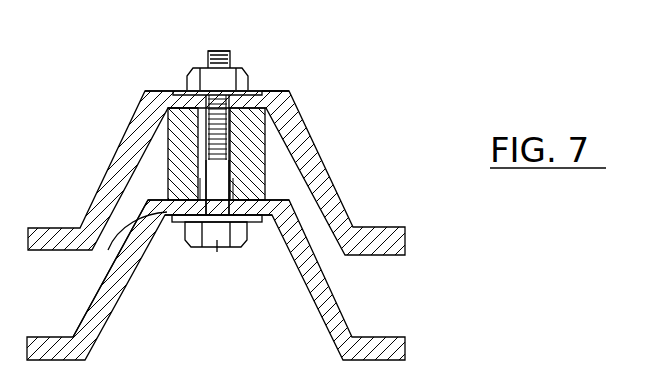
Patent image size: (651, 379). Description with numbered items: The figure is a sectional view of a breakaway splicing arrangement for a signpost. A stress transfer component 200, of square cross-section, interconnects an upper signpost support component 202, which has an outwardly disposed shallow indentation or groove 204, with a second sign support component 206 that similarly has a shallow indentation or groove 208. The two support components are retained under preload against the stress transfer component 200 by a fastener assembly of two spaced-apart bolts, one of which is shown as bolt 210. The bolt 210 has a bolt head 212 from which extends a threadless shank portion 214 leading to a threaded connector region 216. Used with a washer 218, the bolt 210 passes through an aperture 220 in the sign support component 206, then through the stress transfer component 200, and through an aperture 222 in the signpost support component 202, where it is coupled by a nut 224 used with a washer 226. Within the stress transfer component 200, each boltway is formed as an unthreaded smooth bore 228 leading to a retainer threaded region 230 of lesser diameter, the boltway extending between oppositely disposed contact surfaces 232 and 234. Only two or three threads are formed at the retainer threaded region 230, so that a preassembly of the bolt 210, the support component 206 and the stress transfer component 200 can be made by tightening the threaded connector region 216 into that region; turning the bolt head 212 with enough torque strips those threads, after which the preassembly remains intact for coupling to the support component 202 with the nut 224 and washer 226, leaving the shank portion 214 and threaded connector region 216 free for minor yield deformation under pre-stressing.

The stress transfer component 200 is at (168, 163).
The signpost support component 202 is at (333, 198).
The shallow indentation or groove 204 is at (263, 91).
The second sign support component 206 is at (333, 307).
The shallow indentation or groove 208 is at (167, 200).
The bolt 210 is at (205, 290).
The bolt head 212 is at (218, 250).
The shank portion 214 is at (228, 163).
The threaded connector region 216 is at (215, 98).
The washer 218 is at (186, 246).
The aperture 220 is at (102, 283).
The aperture 222 is at (228, 70).
The nut 224 is at (205, 70).
The washer 226 is at (252, 88).
The smooth bore 228 is at (232, 173).
The retainer threaded region 230 is at (177, 112).
The contact surface 232 is at (108, 250).
The contact surface 234 is at (283, 93).